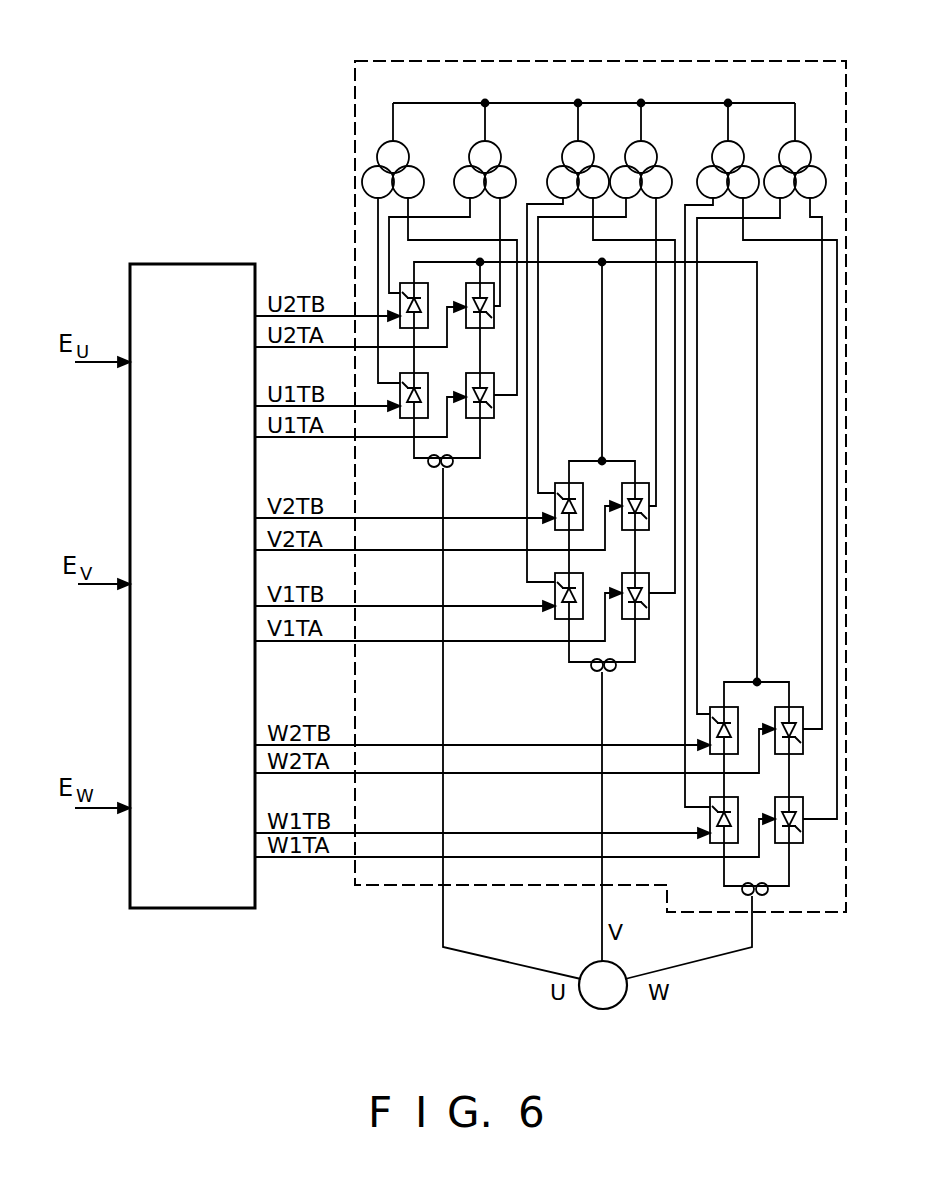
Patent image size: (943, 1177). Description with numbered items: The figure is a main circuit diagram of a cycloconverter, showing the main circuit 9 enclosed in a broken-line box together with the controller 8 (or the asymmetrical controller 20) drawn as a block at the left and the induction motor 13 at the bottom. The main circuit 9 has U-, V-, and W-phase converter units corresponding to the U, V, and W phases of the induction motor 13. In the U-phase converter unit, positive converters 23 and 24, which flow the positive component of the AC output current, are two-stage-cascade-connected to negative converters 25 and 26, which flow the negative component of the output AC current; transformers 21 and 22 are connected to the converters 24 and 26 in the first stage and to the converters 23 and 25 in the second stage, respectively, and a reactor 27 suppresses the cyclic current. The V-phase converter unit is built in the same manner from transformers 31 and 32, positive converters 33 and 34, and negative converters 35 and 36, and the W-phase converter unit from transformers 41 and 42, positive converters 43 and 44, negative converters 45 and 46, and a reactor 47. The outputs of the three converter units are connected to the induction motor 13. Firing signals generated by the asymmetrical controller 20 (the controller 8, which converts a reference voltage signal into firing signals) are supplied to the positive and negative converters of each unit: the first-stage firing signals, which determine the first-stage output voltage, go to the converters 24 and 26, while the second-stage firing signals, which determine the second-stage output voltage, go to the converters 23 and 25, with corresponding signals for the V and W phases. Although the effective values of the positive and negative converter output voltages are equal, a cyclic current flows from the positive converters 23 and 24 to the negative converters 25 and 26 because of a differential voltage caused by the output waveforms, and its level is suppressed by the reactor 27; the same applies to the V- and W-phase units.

The main circuit 9 is at (567, 61).
The controller 8 is at (207, 558).
The asymmetrical controller 20 is at (196, 264).
The induction motor 13 is at (617, 1006).
The transformer 21 is at (407, 147).
The transformer 22 is at (499, 147).
The transformer 31 is at (588, 151).
The transformer 32 is at (648, 147).
The transformer 41 is at (738, 149).
The transformer 42 is at (804, 149).
The positive converter 23 is at (428, 304).
The positive converter 24 is at (428, 389).
The negative converter 25 is at (494, 328).
The negative converter 26 is at (492, 418).
The reactor 27 is at (458, 464).
The positive converter 33 is at (582, 506).
The positive converter 34 is at (582, 592).
The negative converter 35 is at (649, 530).
The negative converter 36 is at (649, 619).
The positive converter 43 is at (738, 722).
The positive converter 44 is at (738, 816).
The negative converter 45 is at (800, 707).
The negative converter 46 is at (803, 843).
The reactor 47 is at (776, 889).